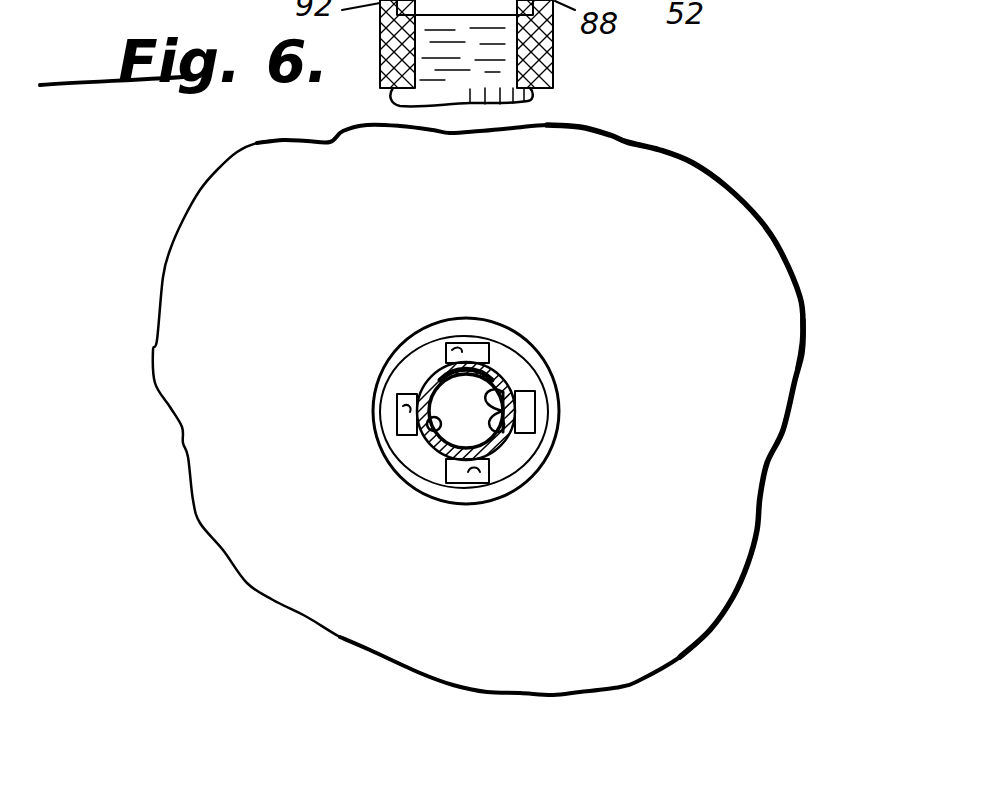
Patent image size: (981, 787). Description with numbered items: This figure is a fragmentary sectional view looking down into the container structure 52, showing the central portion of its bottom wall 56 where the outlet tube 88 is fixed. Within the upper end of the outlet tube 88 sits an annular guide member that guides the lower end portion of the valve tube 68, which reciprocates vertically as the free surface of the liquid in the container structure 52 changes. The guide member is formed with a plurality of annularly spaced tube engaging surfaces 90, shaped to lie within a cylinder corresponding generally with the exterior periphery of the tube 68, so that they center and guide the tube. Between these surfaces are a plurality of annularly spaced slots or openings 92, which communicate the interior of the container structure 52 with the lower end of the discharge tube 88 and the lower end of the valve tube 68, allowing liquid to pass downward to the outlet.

The container structure 52 is at (768, 232).
The bottom wall 56 is at (765, 330).
The outlet tube 88 is at (525, 345).
The tube 68 is at (440, 447).
The slots or openings 92 is at (440, 344).
The tube engaging surfaces 90 is at (428, 423).